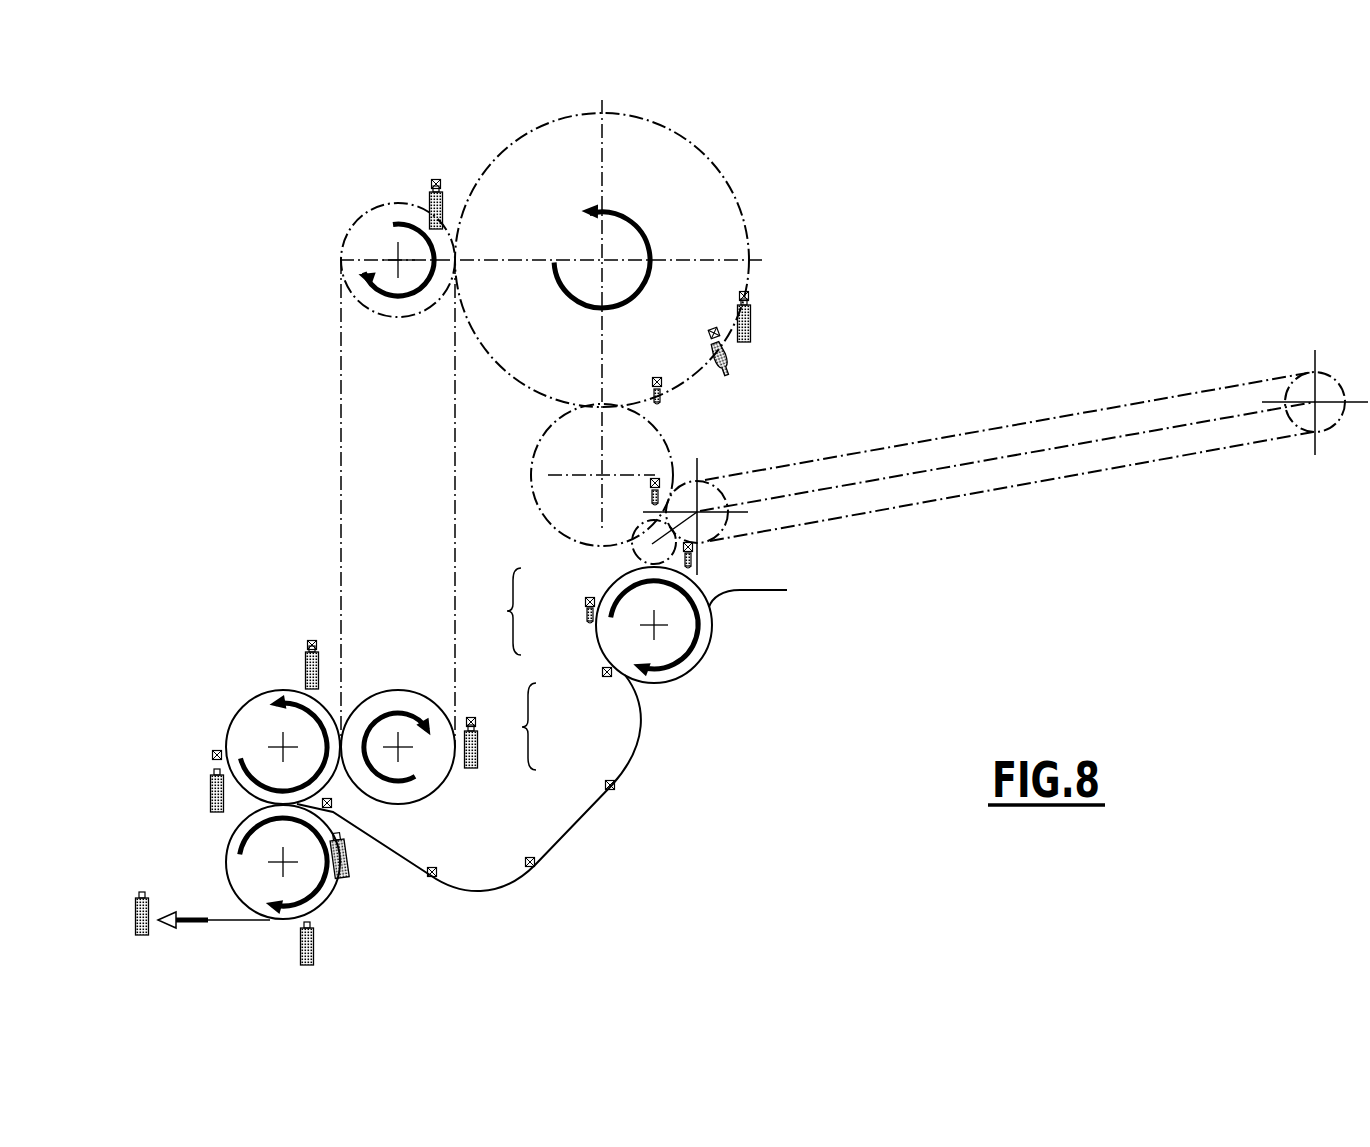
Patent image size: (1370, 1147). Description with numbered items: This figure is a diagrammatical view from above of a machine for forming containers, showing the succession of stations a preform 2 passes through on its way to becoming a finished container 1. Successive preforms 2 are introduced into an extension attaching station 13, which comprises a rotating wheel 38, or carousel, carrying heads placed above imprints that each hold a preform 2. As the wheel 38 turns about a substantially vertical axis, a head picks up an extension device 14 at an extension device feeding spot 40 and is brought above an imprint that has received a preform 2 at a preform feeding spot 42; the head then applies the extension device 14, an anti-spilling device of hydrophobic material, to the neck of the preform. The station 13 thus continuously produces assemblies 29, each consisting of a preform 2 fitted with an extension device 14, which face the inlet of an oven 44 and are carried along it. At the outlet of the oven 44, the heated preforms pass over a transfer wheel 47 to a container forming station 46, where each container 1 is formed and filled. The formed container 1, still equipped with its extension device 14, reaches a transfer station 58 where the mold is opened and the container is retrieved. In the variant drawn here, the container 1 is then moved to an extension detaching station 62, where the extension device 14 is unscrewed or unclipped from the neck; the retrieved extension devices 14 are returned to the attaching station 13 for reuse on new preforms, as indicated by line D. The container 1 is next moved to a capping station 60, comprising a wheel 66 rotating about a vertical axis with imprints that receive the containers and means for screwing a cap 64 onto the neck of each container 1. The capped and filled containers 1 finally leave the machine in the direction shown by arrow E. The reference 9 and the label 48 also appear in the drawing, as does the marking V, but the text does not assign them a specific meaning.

The container 1 is at (480, 748).
The preform 2 is at (588, 615).
The assembly of label and container 9 is at (544, 726).
The extension attaching station 13 is at (694, 679).
The extension device 14 is at (586, 602).
The assembly 29 is at (494, 611).
The wheel 38 is at (703, 638).
The extension device feeding spot 40 is at (617, 682).
The preform feeding spot 42 is at (715, 602).
The oven 44 is at (975, 460).
The container forming station 46 is at (750, 195).
The transfer wheel 47 is at (652, 448).
The roller 48 is at (617, 122).
The transfer station 58 is at (373, 432).
The capping station 60 is at (263, 895).
The extension detaching station 62 is at (248, 718).
The cap 64 is at (347, 840).
The wheel 66 is at (235, 865).
The line D is at (577, 835).
The arrow E is at (190, 923).
The feed direction V is at (790, 575).